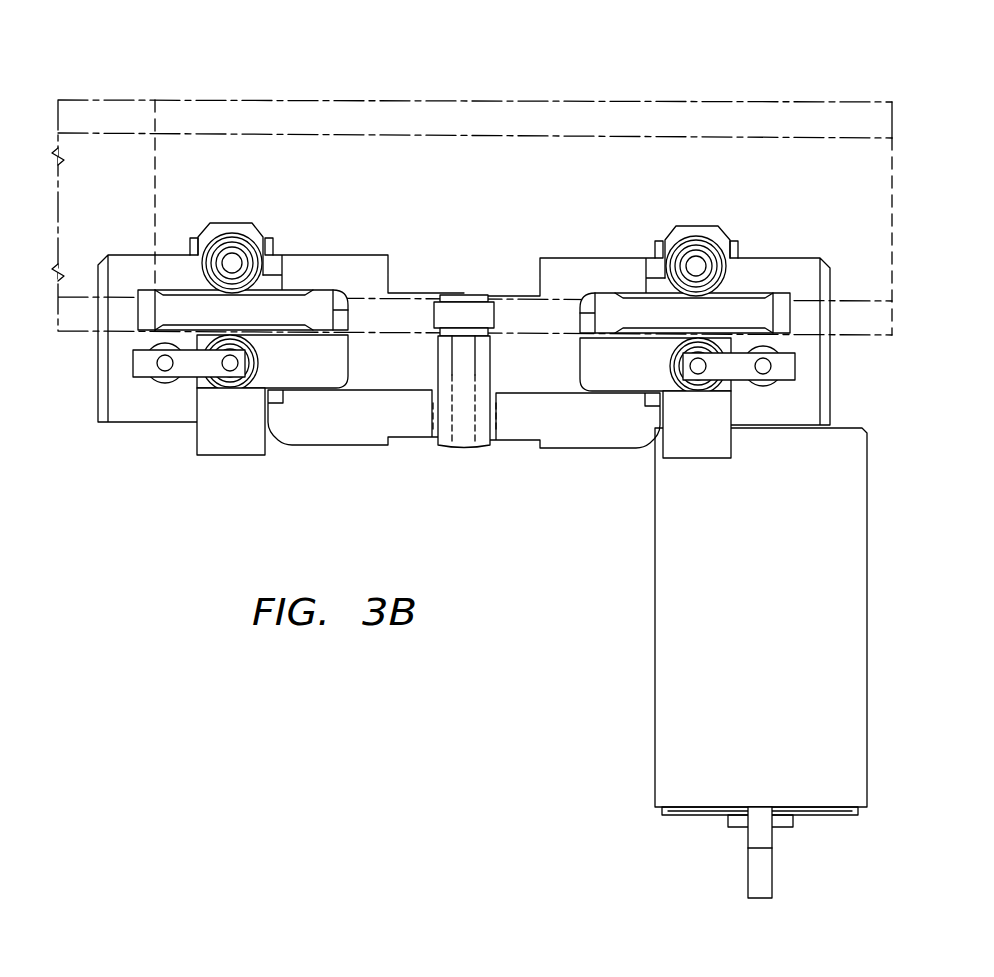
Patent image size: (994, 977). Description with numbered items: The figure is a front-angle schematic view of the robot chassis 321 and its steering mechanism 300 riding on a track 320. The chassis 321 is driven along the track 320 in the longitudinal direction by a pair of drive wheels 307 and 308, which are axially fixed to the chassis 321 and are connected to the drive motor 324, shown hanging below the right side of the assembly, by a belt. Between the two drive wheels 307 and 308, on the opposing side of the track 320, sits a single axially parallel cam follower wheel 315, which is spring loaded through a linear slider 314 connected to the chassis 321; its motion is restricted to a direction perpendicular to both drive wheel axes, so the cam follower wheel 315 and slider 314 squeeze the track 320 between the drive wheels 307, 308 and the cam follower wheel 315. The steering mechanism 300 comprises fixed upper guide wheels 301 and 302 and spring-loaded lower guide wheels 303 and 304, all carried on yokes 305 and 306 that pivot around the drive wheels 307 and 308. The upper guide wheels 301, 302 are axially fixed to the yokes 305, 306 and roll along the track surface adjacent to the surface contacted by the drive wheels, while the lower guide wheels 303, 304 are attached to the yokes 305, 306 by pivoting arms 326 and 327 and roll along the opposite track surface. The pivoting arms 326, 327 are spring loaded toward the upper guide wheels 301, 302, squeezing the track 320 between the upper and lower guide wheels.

The steering mechanism 300 is at (414, 78).
The track 320 is at (88, 148).
The upper guide wheel 301 is at (232, 226).
The upper guide wheel 302 is at (696, 230).
The lower guide wheel 303 is at (265, 358).
The lower guide wheel 304 is at (665, 358).
The yoke 305 is at (232, 448).
The yoke 306 is at (695, 453).
The drive wheel 307 is at (318, 300).
The drive wheel 308 is at (608, 305).
The linear slider 314 is at (348, 440).
The cam follower wheel 315 is at (464, 305).
The robot chassis 321 is at (122, 413).
The drive motor 324 is at (655, 645).
The pivoting arm 326 is at (140, 363).
The pivoting arm 327 is at (793, 366).